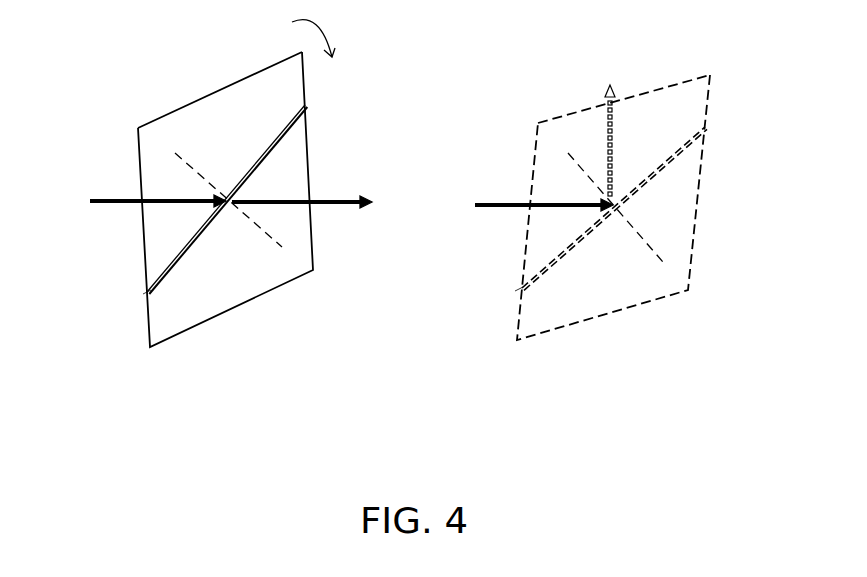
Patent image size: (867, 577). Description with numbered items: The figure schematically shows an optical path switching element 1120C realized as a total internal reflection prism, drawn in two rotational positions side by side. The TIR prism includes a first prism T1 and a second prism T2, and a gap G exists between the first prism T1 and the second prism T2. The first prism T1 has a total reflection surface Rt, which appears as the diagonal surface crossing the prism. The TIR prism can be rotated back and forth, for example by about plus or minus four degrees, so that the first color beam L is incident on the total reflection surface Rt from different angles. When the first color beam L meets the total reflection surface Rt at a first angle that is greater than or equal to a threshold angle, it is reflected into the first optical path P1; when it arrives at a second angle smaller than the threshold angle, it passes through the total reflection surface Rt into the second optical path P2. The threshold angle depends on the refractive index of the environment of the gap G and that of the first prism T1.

The optical path switching element 1120C is at (415, 208).
The first prism T1 is at (177, 106).
The second prism T2 is at (146, 331).
The total reflection surface Rt is at (171, 262).
The gap G is at (145, 294).
The first color beam L is at (105, 198).
The first optical path P1 is at (615, 91).
The second optical path P2 is at (333, 198).